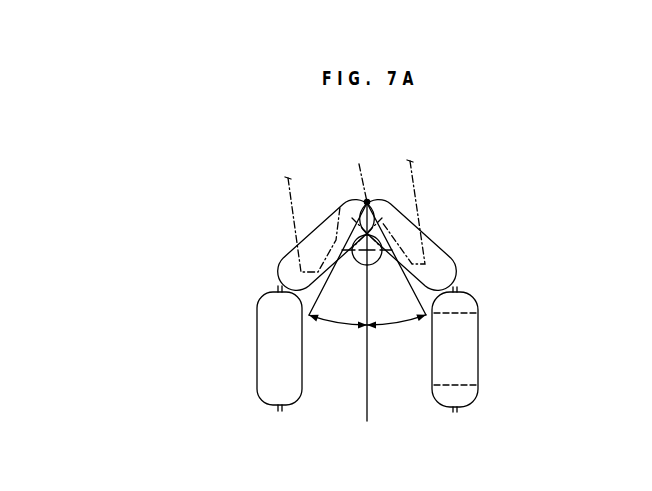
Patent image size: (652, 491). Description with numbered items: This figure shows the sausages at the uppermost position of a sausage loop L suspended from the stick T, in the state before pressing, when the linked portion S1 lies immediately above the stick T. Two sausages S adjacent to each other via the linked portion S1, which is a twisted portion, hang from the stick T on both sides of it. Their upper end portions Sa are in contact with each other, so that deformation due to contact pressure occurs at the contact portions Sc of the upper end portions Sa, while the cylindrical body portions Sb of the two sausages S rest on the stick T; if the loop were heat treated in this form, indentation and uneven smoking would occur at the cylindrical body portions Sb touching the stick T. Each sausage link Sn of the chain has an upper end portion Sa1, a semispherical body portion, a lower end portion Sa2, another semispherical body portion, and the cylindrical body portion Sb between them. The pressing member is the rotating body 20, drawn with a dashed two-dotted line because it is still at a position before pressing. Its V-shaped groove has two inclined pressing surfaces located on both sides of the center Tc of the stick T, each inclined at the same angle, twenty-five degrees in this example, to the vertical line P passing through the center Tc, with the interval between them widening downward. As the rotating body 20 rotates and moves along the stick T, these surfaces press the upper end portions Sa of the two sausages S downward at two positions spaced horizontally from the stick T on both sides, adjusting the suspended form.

The sausage S is at (287, 267).
The upper end portion Sa is at (288, 179).
The linked portion S1 is at (366, 201).
The contact portion Sc is at (368, 200).
The stick T is at (356, 259).
The center of the stick Tc is at (356, 246).
The rotating body 20 is at (420, 209).
The sausage loop L is at (257, 365).
The cylindrical body portion Sb is at (468, 368).
The sausage link Sn is at (270, 385).
The upper end portion Sa1 is at (463, 307).
The lower end portion Sa2 is at (463, 397).
The vertical line P is at (367, 398).